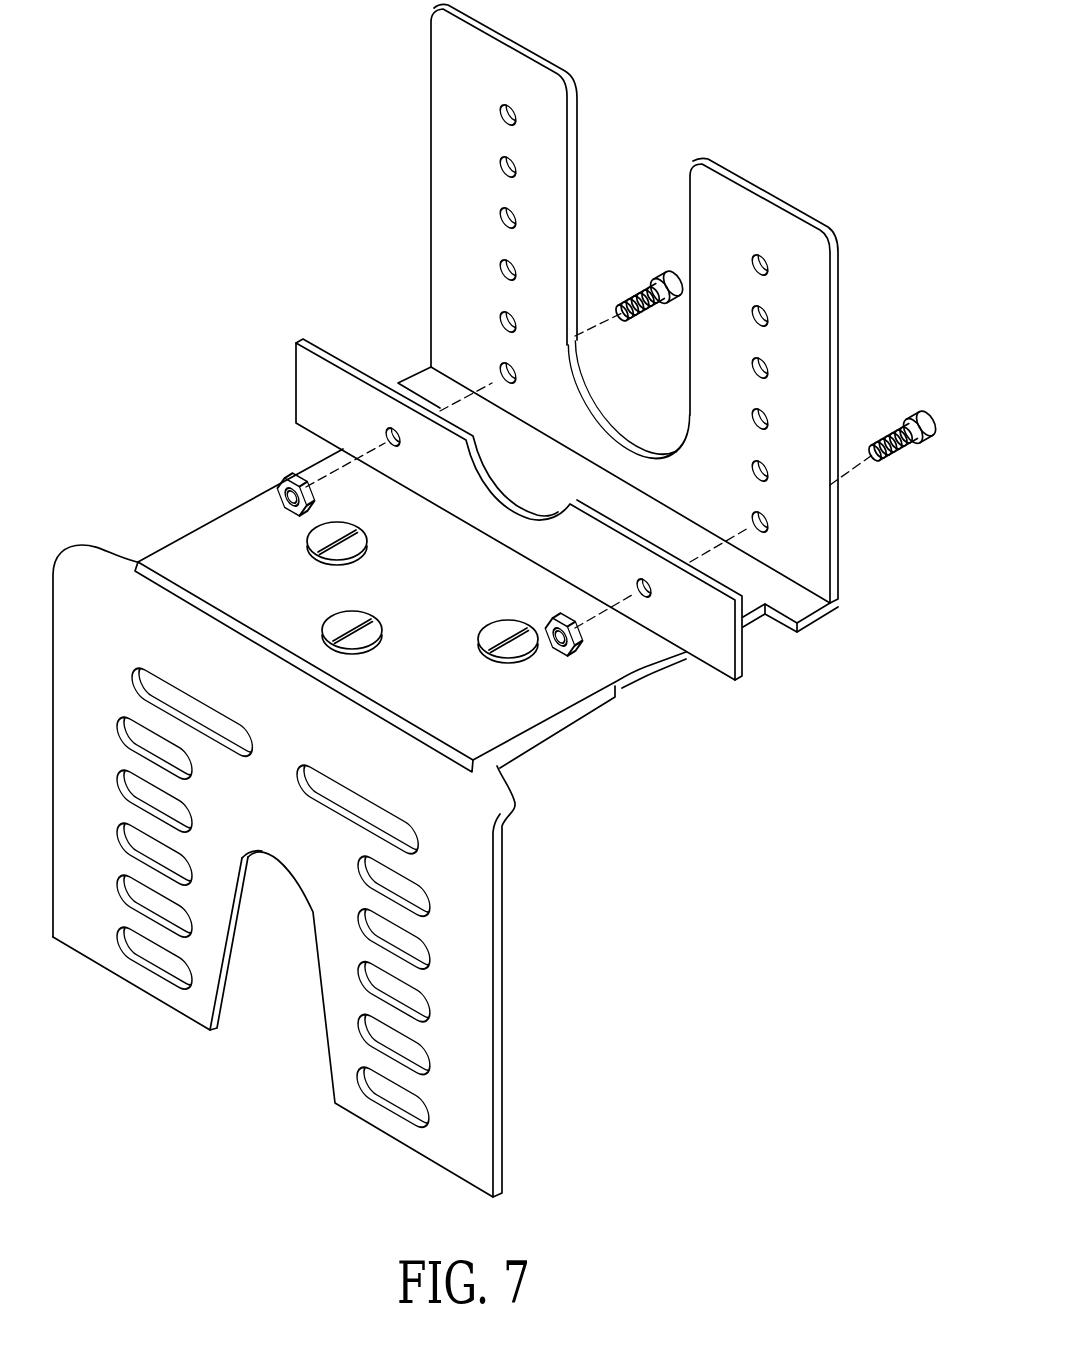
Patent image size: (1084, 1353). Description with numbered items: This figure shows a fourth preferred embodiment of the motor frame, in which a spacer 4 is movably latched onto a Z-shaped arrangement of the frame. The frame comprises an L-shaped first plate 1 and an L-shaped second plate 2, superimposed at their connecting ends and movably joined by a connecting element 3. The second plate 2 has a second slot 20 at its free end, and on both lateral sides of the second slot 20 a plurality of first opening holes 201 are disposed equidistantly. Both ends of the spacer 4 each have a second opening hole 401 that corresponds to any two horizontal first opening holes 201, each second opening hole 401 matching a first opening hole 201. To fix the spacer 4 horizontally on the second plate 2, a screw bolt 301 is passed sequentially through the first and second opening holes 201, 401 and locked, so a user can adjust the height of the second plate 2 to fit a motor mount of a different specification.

The first plate 1 is at (480, 923).
The second plate 2 is at (622, 667).
The connecting element 3 is at (513, 645).
The spacer 4 is at (485, 501).
The second slot 20 is at (591, 318).
The first opening holes 201 is at (499, 216).
The screw bolt 301 is at (938, 410).
The second opening hole 401 is at (388, 430).